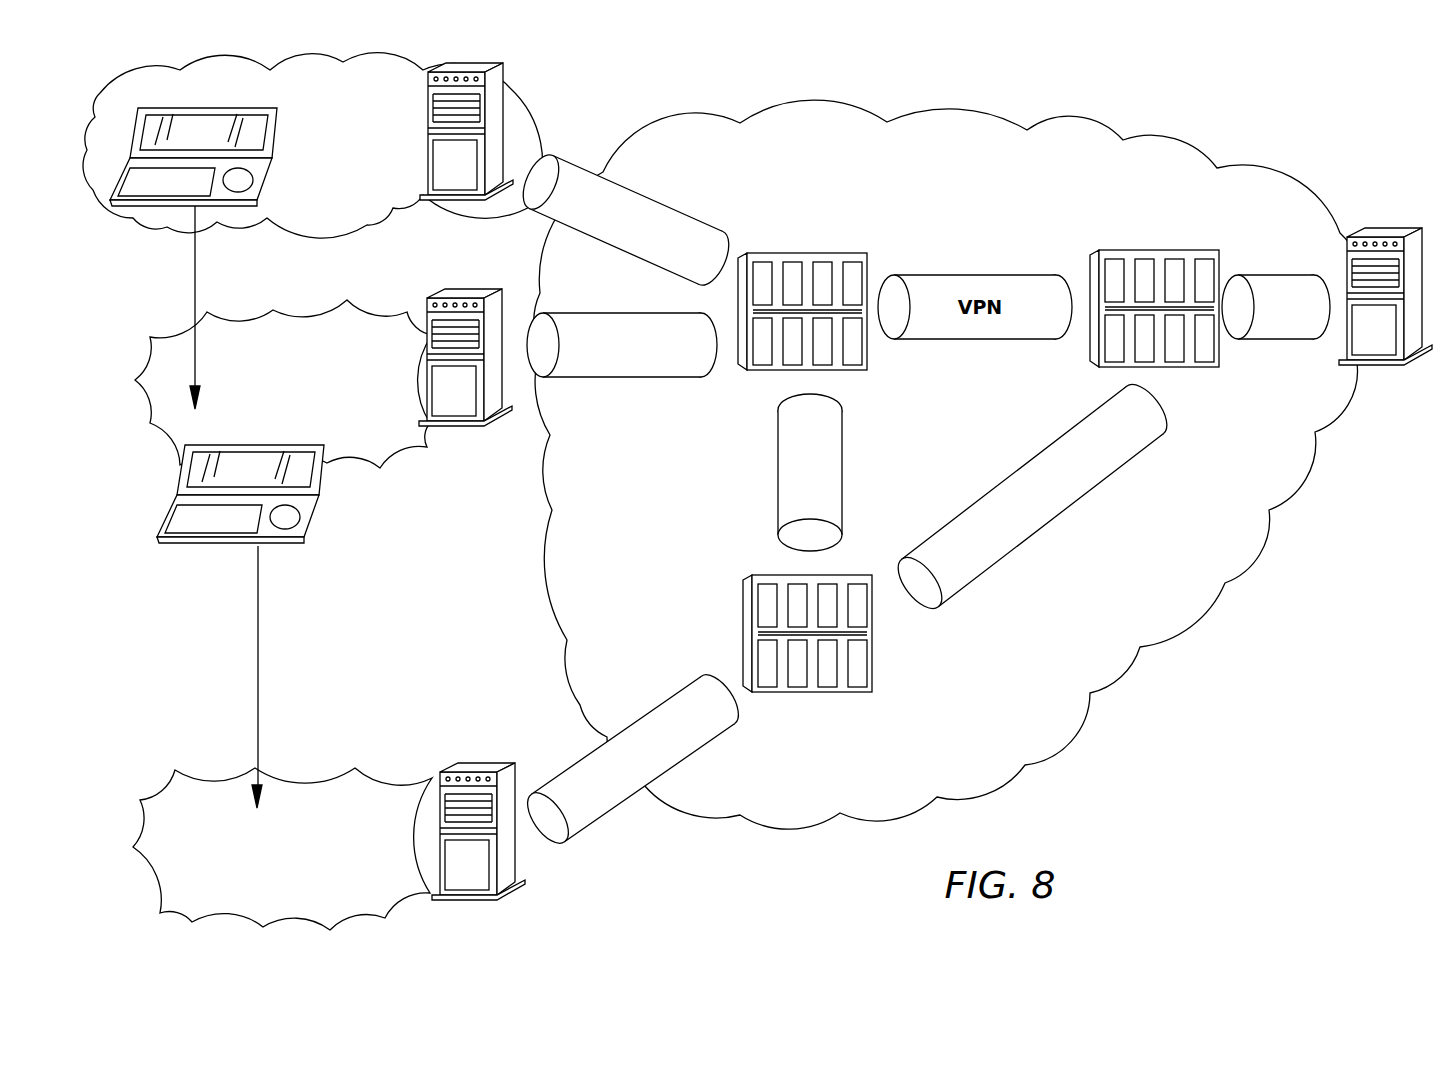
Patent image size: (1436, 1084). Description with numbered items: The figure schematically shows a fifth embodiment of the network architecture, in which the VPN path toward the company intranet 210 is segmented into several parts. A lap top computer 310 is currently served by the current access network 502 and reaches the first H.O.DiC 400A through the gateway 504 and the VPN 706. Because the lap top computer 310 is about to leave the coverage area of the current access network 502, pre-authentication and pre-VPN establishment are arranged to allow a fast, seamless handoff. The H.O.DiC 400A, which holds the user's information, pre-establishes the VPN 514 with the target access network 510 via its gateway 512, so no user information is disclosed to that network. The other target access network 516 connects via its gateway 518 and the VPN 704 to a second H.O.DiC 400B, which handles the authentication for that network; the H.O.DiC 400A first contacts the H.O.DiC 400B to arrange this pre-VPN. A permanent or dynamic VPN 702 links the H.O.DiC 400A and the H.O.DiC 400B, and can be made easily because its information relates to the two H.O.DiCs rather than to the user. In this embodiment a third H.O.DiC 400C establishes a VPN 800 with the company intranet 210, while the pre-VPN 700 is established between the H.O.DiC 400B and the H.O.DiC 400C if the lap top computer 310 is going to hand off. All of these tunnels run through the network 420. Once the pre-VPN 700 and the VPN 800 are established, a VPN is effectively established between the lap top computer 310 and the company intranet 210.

The lap top computer 310 is at (212, 108).
The current access network 502 is at (365, 228).
The gateway 504 is at (505, 96).
The target access network 510 is at (380, 466).
The target access network server 512 is at (466, 427).
The target access network 516 is at (326, 762).
The gateway 518 is at (480, 771).
The network (internet) 420 is at (920, 182).
The VPN 706 is at (667, 208).
The VPN 514 is at (605, 379).
The VPN 702 is at (843, 455).
The pre-VPN 700 is at (1051, 518).
The VPN 704 is at (680, 692).
The VPN 800 is at (1280, 275).
The H.O.DiC 400A is at (867, 357).
The H.O.DiC 400B is at (873, 670).
The H.O.DiC 400C is at (1200, 370).
The company intranet 210 is at (1383, 367).